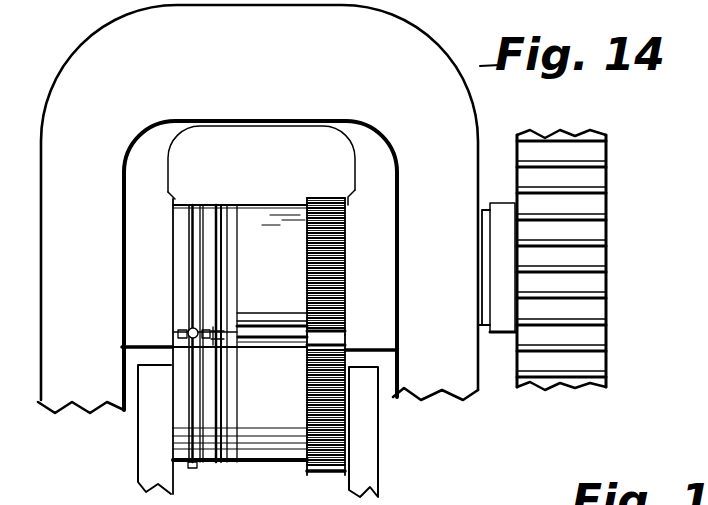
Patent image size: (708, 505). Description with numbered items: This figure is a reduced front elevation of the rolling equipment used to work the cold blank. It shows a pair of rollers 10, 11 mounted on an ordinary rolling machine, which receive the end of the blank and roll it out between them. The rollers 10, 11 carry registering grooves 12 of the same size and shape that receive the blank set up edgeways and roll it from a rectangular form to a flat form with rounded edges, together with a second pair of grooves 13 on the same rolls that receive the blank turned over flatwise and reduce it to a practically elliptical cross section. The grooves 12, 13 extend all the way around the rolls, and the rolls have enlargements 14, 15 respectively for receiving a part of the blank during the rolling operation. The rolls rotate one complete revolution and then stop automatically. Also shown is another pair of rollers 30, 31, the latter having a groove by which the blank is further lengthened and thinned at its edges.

The roller 10 is at (208, 203).
The roller 11 is at (200, 468).
The registering grooves 12 is at (220, 257).
The grooves 13 is at (188, 253).
The enlargement 14 is at (220, 345).
The enlargement 15 is at (185, 327).
The roller 30 is at (270, 202).
The roller 31 is at (258, 474).